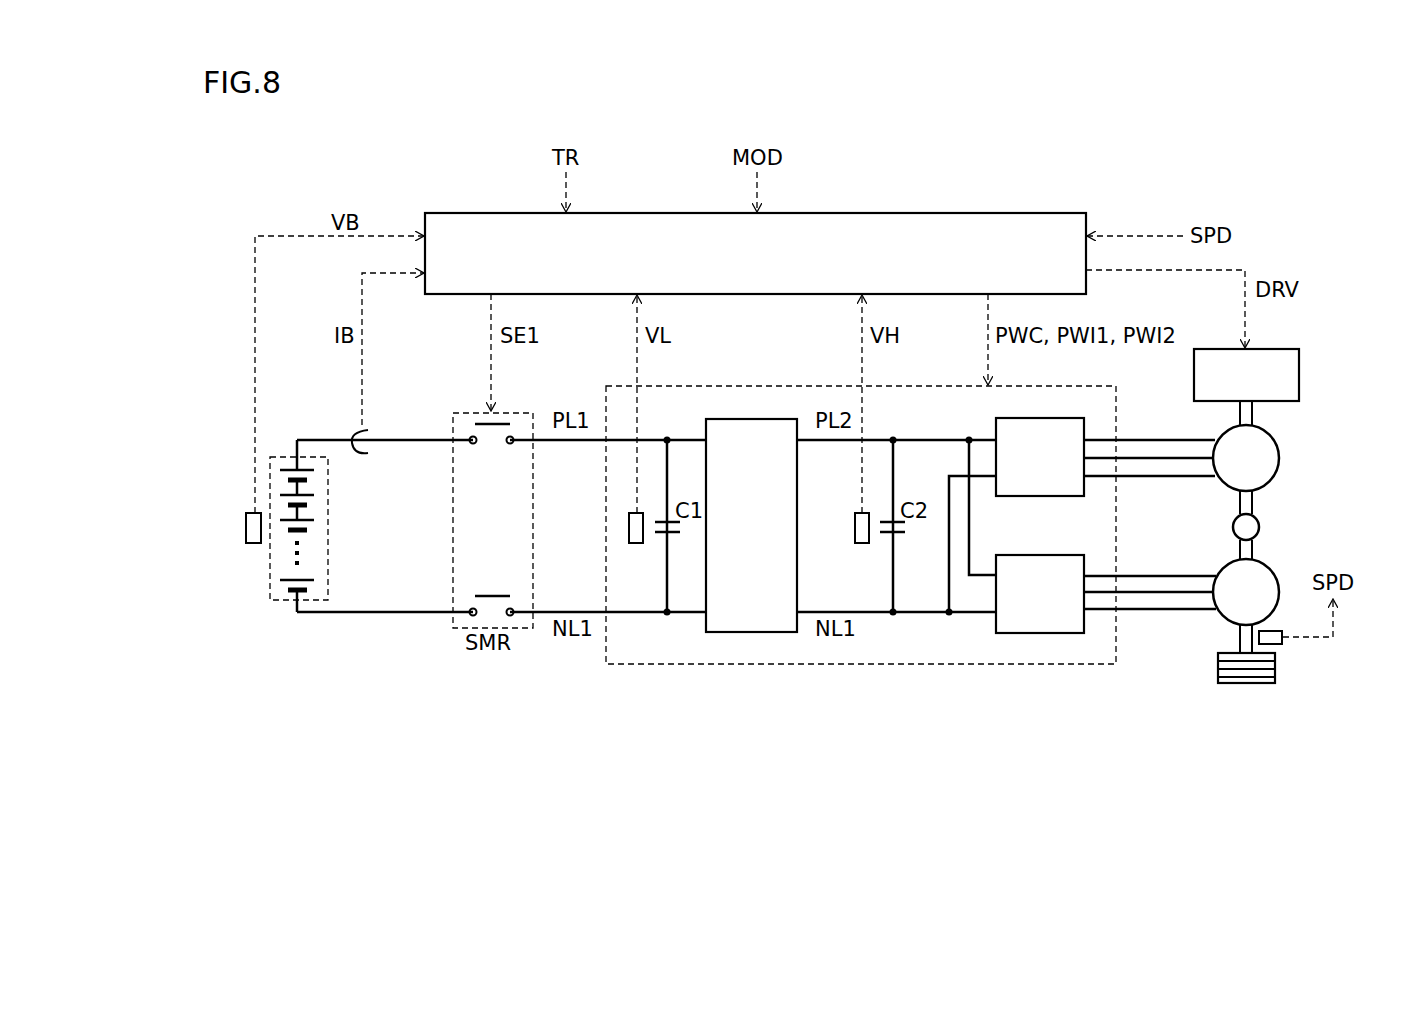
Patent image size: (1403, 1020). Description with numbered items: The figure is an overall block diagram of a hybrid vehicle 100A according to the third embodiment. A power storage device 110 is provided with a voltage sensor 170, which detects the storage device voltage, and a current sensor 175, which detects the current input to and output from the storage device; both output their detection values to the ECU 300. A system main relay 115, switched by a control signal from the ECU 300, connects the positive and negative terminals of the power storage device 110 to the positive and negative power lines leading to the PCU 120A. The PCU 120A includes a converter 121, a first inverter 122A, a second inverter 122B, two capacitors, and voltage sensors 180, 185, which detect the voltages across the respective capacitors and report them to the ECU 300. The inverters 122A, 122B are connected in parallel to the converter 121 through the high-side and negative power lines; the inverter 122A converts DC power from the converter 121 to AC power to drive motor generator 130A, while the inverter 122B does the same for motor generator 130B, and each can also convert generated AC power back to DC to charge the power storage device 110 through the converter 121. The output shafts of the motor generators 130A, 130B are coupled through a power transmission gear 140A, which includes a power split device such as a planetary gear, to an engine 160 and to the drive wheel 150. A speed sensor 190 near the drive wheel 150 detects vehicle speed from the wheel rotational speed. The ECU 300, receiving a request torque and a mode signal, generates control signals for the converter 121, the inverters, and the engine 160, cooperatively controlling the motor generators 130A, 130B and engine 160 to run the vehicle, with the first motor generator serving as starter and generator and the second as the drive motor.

The hybrid vehicle 100A is at (1344, 157).
The power storage device 110 is at (280, 456).
The system main relay 115 is at (513, 412).
The PCU 120A is at (1082, 386).
The converter 121 is at (748, 419).
The inverter 122A is at (1040, 418).
The inverter 122B is at (1040, 555).
The motor generator 130A is at (1280, 459).
The motor generator 130B is at (1273, 566).
The power transmission gear 140A is at (1233, 527).
The drive wheel 150 is at (1247, 683).
The engine 160 is at (1285, 349).
The voltage sensor 170 is at (246, 531).
The current sensor 175 is at (366, 454).
The voltage sensor 180 is at (636, 543).
The voltage sensor 185 is at (862, 543).
The speed sensor 190 is at (1274, 645).
The ECU 300 is at (1003, 213).